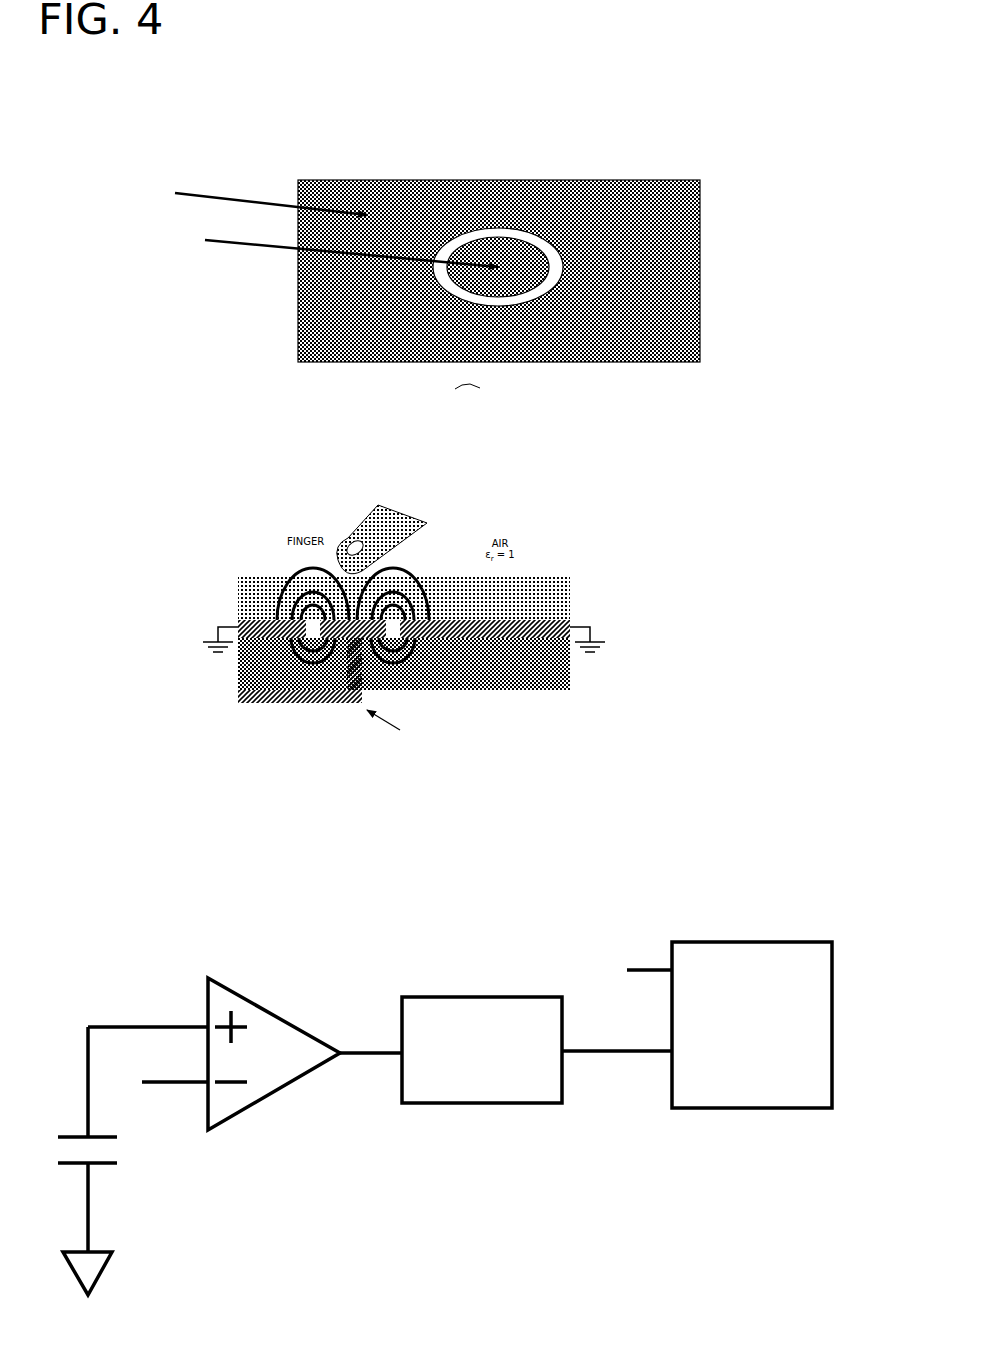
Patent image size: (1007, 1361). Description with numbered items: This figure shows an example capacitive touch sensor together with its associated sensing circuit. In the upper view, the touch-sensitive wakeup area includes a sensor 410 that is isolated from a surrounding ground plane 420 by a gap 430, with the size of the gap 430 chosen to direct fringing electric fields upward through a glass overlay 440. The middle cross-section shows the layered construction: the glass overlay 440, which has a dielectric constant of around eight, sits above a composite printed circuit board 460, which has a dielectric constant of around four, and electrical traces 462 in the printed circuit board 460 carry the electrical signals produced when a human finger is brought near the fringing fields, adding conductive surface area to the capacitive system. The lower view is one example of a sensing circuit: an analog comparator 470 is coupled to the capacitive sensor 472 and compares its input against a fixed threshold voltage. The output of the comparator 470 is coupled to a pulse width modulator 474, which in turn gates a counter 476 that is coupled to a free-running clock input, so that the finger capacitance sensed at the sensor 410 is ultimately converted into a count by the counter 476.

The sensor 410 is at (238, 242).
The ground plane 420 is at (207, 197).
The gap 430 is at (525, 235).
The glass overlay 440 is at (542, 582).
The printed circuit board 460 is at (542, 685).
The electrical traces 462 is at (355, 693).
The analog comparator 470 is at (253, 1000).
The capacitive sensor 472 is at (107, 1163).
The pulse width modulator 474 is at (445, 997).
The counter 476 is at (748, 942).